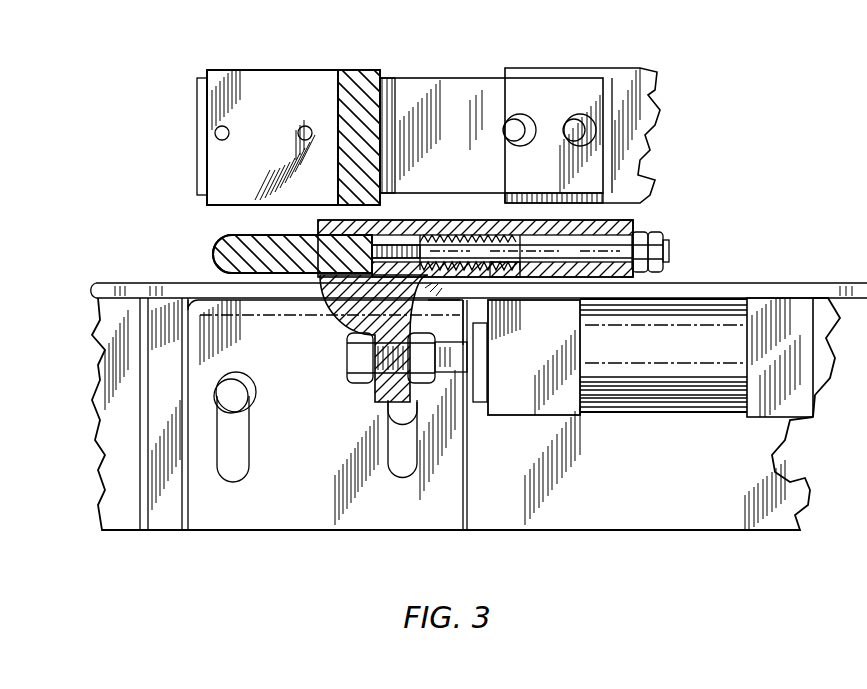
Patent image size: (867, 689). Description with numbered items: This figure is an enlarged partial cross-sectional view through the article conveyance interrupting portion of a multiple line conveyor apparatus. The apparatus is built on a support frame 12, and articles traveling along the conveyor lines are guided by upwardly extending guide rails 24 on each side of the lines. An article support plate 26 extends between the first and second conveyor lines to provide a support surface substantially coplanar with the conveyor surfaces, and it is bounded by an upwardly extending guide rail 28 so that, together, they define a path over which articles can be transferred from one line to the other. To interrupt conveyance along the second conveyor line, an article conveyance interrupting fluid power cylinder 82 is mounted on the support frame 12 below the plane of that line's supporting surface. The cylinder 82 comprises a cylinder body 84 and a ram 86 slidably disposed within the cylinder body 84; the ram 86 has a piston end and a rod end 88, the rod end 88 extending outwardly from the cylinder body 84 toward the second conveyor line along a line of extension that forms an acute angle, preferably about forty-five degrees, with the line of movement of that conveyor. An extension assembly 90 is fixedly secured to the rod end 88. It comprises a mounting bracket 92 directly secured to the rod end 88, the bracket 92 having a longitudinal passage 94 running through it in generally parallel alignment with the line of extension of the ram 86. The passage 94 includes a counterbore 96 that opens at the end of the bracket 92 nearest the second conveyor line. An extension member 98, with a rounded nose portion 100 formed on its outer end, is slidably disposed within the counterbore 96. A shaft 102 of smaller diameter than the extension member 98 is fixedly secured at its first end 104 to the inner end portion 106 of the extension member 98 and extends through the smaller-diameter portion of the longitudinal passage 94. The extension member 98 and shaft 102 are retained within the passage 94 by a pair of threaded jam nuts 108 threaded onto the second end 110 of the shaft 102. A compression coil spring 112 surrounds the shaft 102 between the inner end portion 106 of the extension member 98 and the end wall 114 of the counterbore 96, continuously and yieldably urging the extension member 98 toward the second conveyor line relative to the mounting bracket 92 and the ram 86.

The support frame 12 is at (255, 518).
The guide rails 24 is at (312, 76).
The article support plate 26 is at (136, 283).
The guide rail 28 is at (455, 80).
The article conveyance interrupting fluid power cylinder 82 is at (705, 412).
The cylinder body 84 is at (675, 418).
The ram 86 is at (452, 374).
The rod end 88 is at (420, 420).
The extension assembly 90 is at (633, 220).
The mounting bracket 92 is at (360, 336).
The longitudinal passage 94 is at (392, 222).
The counterbore 96 is at (330, 272).
The extension member 98 is at (258, 240).
The rounded nose portion 100 is at (215, 244).
The shaft 102 is at (565, 258).
The first end 104 is at (430, 262).
The inner end portion 106 is at (456, 233).
The threaded jam nuts 108 is at (655, 232).
The second end 110 is at (670, 250).
The compression coil spring 112 is at (455, 226).
The end wall 114 is at (505, 274).